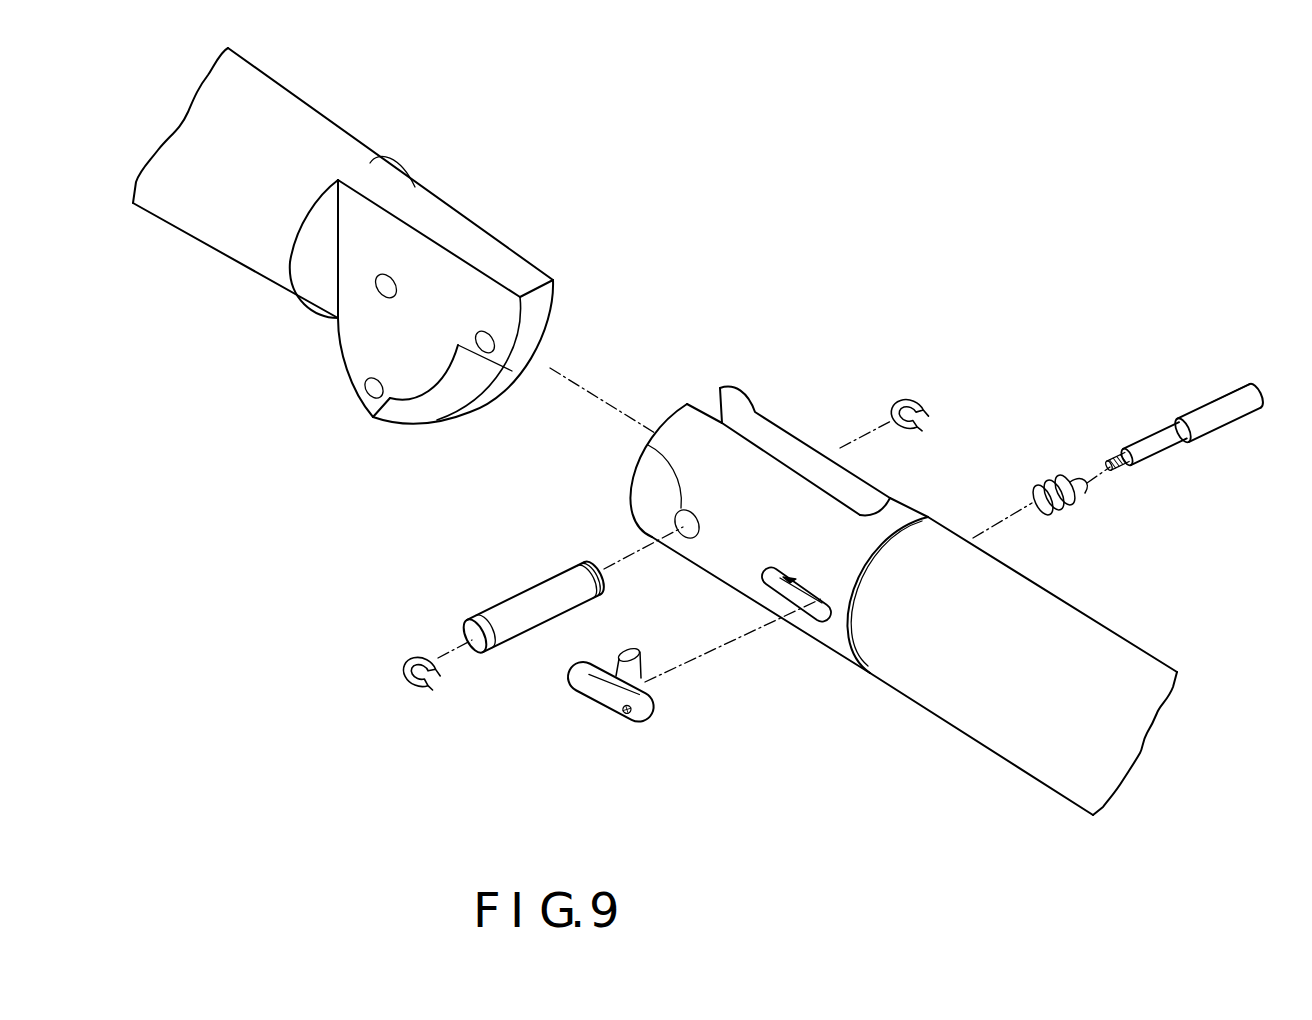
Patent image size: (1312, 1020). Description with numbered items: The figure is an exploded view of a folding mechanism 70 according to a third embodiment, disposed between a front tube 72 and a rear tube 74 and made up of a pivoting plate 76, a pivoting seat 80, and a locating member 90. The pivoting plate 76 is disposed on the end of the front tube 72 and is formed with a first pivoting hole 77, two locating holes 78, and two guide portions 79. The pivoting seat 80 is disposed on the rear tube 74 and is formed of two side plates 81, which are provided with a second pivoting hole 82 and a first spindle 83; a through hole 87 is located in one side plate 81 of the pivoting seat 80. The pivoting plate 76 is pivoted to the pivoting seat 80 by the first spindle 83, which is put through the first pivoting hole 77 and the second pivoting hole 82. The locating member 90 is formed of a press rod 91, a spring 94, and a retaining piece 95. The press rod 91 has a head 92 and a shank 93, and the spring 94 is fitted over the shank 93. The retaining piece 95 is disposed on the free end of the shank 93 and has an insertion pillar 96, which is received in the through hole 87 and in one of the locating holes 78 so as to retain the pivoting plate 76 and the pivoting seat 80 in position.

The folding mechanism 70 is at (722, 489).
The front tube 72 is at (207, 220).
The rear tube 74 is at (988, 735).
The pivoting plate 76 is at (408, 318).
The first pivoting hole 77 is at (377, 293).
The locating holes 78 is at (369, 392).
The guide portions 79 is at (414, 413).
The pivoting seat 80 is at (784, 492).
The side plates 81 is at (757, 423).
The second pivoting hole 82 is at (650, 447).
The first spindle 83 is at (518, 622).
The through hole 87 is at (788, 577).
The locating member 90 is at (1170, 444).
The press rod 91 is at (1219, 413).
The head 92 is at (1235, 423).
The shank 93 is at (1145, 448).
The spring 94 is at (1073, 505).
The retaining piece 95 is at (623, 694).
The insertion pillar 96 is at (623, 647).